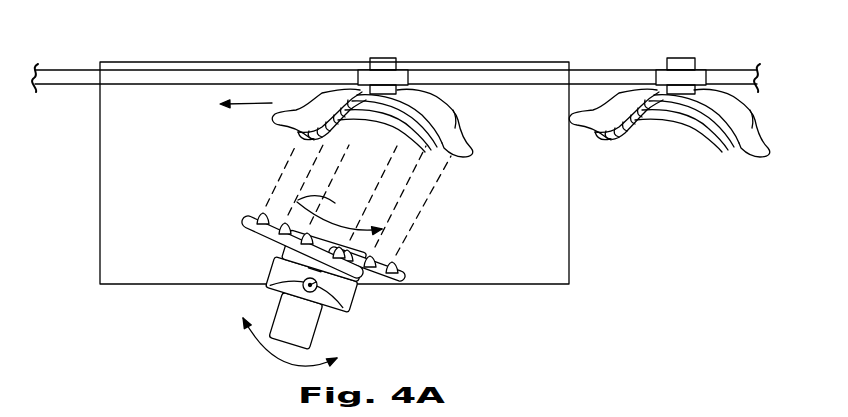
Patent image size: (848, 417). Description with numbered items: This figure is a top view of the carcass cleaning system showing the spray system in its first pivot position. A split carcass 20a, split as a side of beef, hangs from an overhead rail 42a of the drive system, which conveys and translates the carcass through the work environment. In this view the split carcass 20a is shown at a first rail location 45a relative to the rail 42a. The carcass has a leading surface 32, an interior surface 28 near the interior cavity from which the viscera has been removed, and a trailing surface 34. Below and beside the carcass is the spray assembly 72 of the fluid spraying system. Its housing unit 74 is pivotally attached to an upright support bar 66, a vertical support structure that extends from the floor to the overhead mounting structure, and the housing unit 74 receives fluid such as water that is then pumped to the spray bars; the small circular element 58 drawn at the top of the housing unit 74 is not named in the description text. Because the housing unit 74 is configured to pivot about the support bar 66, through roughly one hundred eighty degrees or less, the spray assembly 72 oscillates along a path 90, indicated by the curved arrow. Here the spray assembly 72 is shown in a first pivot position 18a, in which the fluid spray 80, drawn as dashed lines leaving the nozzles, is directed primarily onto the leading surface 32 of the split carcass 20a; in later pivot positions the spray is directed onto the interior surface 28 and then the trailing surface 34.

The overhead rail 42a is at (62, 69).
The first rail location 45a is at (405, 41).
The split carcass 20a is at (386, 135).
The leading surface 32 is at (282, 115).
The interior surface 28 is at (378, 130).
The trailing surface 34 is at (470, 148).
The first pivot position 18a is at (468, 224).
The fluid spray 80 is at (283, 176).
The spray assembly 72 is at (237, 261).
The housing unit 74 is at (350, 298).
The pivot 58 is at (270, 302).
The upright support bar 66 is at (343, 310).
The path 90 is at (272, 356).